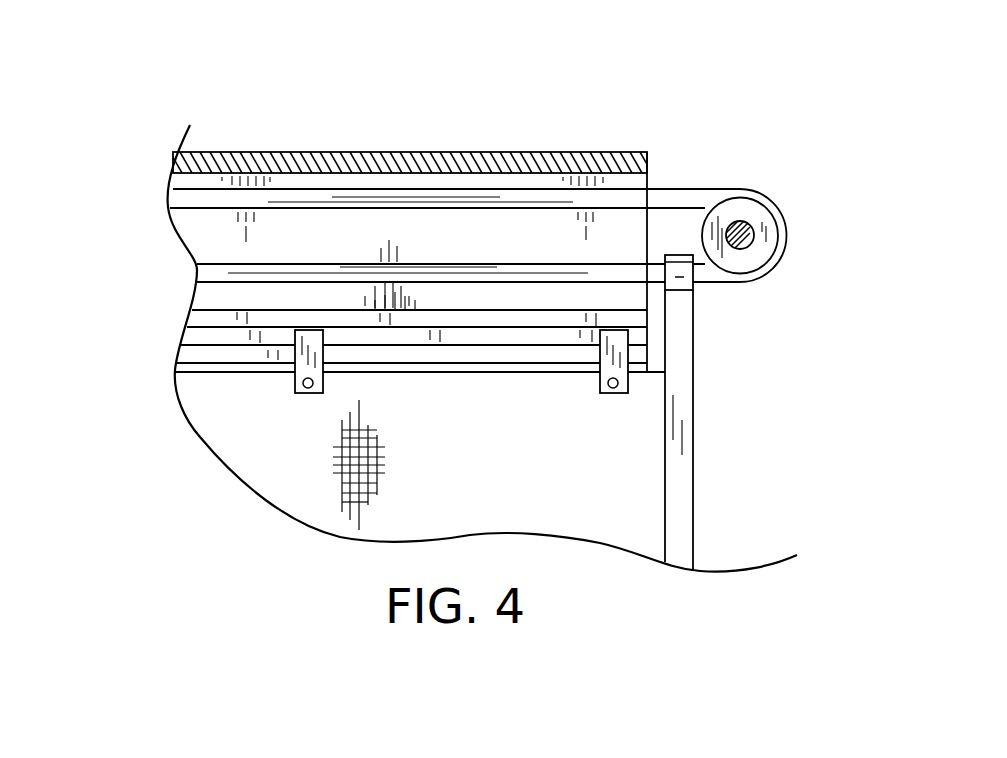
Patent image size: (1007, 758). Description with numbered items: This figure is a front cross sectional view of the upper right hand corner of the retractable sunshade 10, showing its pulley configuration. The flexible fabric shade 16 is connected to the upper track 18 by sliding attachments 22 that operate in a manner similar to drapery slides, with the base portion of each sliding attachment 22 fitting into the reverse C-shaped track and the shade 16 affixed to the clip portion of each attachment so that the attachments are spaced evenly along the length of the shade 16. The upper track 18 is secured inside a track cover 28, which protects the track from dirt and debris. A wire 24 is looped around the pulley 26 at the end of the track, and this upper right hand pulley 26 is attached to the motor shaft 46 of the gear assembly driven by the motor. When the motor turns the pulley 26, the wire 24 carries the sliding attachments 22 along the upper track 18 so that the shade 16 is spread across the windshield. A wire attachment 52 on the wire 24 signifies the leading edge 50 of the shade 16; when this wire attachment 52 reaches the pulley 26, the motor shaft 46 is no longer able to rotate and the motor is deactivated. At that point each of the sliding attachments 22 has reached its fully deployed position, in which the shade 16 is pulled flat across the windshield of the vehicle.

The retractable sunshade 10 is at (222, 76).
The flexible fabric shade 16 is at (465, 510).
The upper track 18 is at (210, 337).
The sliding attachment 22 is at (305, 368).
The wire 24 is at (207, 200).
The pulley 26 is at (760, 227).
The track cover 28 is at (536, 160).
The motor shaft 46 is at (742, 237).
The leading edge 50 is at (678, 533).
The wire attachment 52 is at (673, 285).